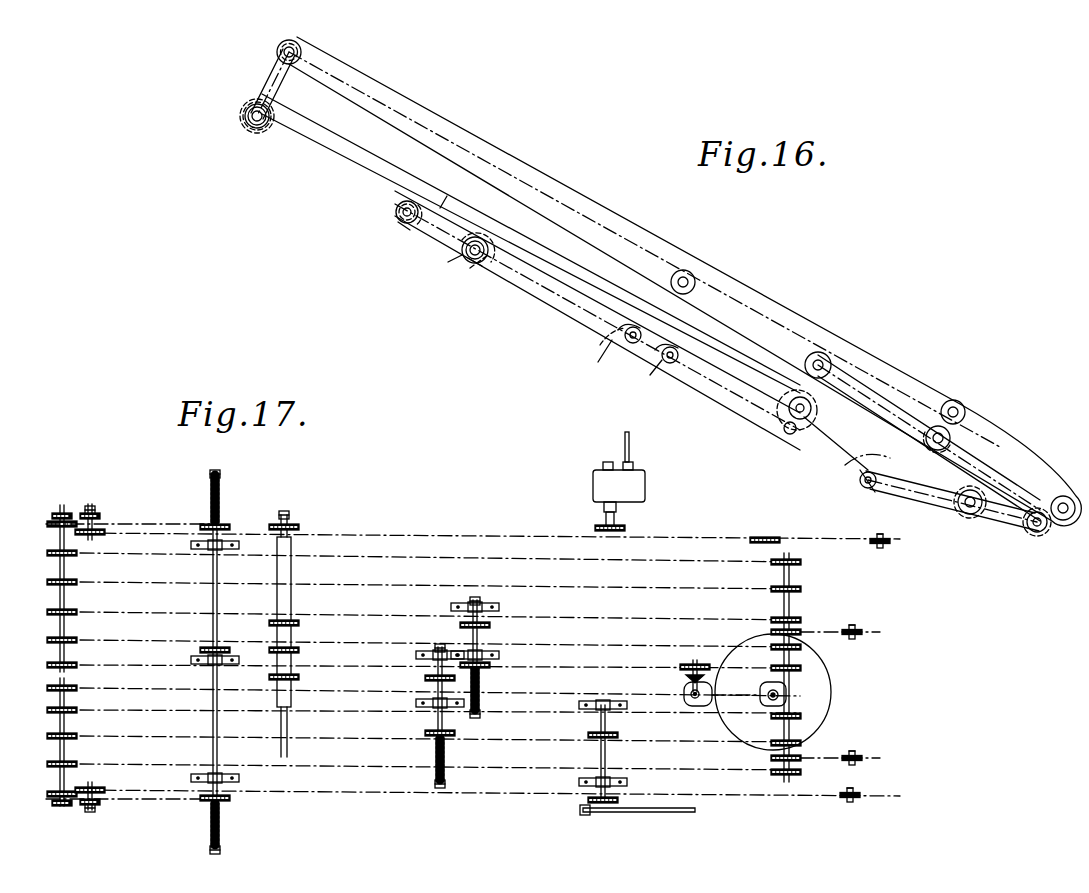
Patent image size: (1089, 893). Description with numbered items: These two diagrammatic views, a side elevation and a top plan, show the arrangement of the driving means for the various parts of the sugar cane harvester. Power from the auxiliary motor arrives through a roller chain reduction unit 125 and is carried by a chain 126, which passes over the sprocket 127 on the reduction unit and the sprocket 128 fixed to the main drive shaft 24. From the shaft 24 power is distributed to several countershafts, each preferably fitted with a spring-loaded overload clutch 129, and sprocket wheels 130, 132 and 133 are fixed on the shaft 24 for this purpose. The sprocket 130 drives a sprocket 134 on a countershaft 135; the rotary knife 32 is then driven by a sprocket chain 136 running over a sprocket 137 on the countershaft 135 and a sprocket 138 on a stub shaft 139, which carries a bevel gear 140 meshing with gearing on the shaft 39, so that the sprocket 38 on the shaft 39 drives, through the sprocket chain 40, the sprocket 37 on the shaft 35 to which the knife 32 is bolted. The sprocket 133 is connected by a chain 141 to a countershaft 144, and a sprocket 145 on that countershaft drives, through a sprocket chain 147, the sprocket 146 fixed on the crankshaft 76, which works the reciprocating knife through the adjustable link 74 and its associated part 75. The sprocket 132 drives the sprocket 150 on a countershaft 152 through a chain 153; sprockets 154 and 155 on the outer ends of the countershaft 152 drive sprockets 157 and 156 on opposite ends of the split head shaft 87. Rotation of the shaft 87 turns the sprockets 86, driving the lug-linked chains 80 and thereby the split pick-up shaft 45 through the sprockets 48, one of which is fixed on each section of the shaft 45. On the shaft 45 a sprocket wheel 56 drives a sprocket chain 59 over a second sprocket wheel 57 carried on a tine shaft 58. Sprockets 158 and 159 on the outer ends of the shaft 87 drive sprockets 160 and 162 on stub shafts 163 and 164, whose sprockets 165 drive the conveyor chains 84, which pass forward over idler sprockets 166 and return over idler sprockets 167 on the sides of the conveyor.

In FIG. 16, the shaft 24 is at (466, 262).
In FIG. 17, the shaft 24 is at (292, 567).
In FIG. 17, the knife 32 is at (832, 685).
In FIG. 17, the shaft 35 is at (780, 697).
In FIG. 17, the sprocket 37 is at (784, 687).
In FIG. 17, the sprocket 38 is at (705, 687).
In FIG. 17, the shaft 39 is at (690, 695).
In FIG. 17, the sprocket chain 40 is at (710, 705).
In FIG. 16, the split shaft 45 is at (968, 514).
In FIG. 17, the split shaft 45 is at (791, 600).
In FIG. 16, the sprocket wheels 48 is at (960, 507).
In FIG. 17, the sprocket wheels 48 is at (798, 588).
In FIG. 17, the sprocket wheel 56 is at (770, 631).
In FIG. 16, the sprocket wheel 57 is at (1043, 530).
In FIG. 17, the sprocket wheel 57 is at (864, 631).
In FIG. 16, the tine shaft 58 is at (1033, 535).
In FIG. 17, the tine shaft 58 is at (856, 625).
In FIG. 16, the sprocket chain 59 is at (1010, 519).
In FIG. 17, the sprocket chain 59 is at (814, 630).
In FIG. 17, the adjustable link 74 is at (672, 813).
In FIG. 17, the bracket 75 is at (584, 815).
In FIG. 16, the crankshaft 76 is at (786, 434).
In FIG. 17, the crankshaft 76 is at (608, 756).
In FIG. 16, the lug linked chains 80 is at (455, 220).
In FIG. 17, the lug linked chains 80 is at (142, 567).
In FIG. 16, the lug-linked conveyor chains 84 is at (528, 150).
In FIG. 17, the lug-linked conveyor chains 84 is at (176, 531).
In FIG. 16, the sprockets 86 is at (245, 118).
In FIG. 17, the sprockets 86 is at (46, 582).
In FIG. 16, the split shaft 87 is at (248, 109).
In FIG. 17, the split shaft 87 is at (58, 597).
In FIG. 16, the roller chain reduction unit 125 is at (832, 372).
In FIG. 17, the roller chain reduction unit 125 is at (592, 482).
In FIG. 16, the chain 126 is at (505, 298).
In FIG. 17, the chain 126 is at (442, 531).
In FIG. 16, the sprocket 127 is at (812, 403).
In FIG. 17, the sprocket 127 is at (626, 527).
In FIG. 16, the sprocket 128 is at (480, 268).
In FIG. 17, the sprocket 128 is at (292, 519).
In FIG. 17, the spring-loaded overload clutch 129 is at (222, 487).
In FIG. 17, the sprocket wheel 130 is at (294, 619).
In FIG. 16, the sprocket wheel 132 is at (488, 237).
In FIG. 17, the sprocket wheel 132 is at (300, 649).
In FIG. 16, the sprocket wheel 133 is at (460, 256).
In FIG. 17, the sprocket wheel 133 is at (294, 679).
In FIG. 17, the sprocket 134 is at (492, 624).
In FIG. 16, the countershaft 135 is at (650, 375).
In FIG. 17, the countershaft 135 is at (460, 632).
In FIG. 16, the sprocket chain 136 is at (881, 466).
In FIG. 17, the sprocket chain 136 is at (564, 661).
In FIG. 16, the sprocket 137 is at (668, 365).
In FIG. 16, the sprocket 138 is at (858, 486).
In FIG. 17, the sprocket 138 is at (692, 663).
In FIG. 16, the stub shaft 139 is at (866, 490).
In FIG. 17, the bevel gear 140 is at (712, 681).
In FIG. 17, the chain 141 is at (364, 677).
In FIG. 16, the countershaft 144 is at (628, 345).
In FIG. 17, the countershaft 144 is at (436, 721).
In FIG. 16, the sprocket 145 is at (589, 348).
In FIG. 17, the sprocket 145 is at (428, 736).
In FIG. 17, the sprocket 146 is at (612, 733).
In FIG. 17, the sprocket chain 147 is at (510, 735).
In FIG. 16, the sprocket 150 is at (405, 236).
In FIG. 17, the sprocket 150 is at (200, 649).
In FIG. 16, the countershaft 152 is at (398, 220).
In FIG. 17, the countershaft 152 is at (210, 675).
In FIG. 16, the chain 153 is at (445, 196).
In FIG. 17, the sprocket 154 is at (226, 523).
In FIG. 16, the sprocket 155 is at (392, 214).
In FIG. 17, the sprocket 155 is at (246, 635).
In FIG. 17, the sprocket 156 is at (50, 792).
In FIG. 17, the sprocket 157 is at (46, 525).
In FIG. 16, the sprocket 158 is at (249, 128).
In FIG. 17, the sprocket 158 is at (56, 804).
In FIG. 17, the sprocket 159 is at (52, 515).
In FIG. 16, the sprocket 160 is at (300, 58).
In FIG. 17, the sprocket 160 is at (96, 805).
In FIG. 17, the sprocket 162 is at (94, 513).
In FIG. 16, the stub shaft 163 is at (277, 52).
In FIG. 17, the stub shaft 163 is at (88, 811).
In FIG. 17, the stub shaft 164 is at (90, 509).
In FIG. 17, the sprockets 165 is at (104, 529).
In FIG. 16, the idler sprockets 166 is at (1048, 495).
In FIG. 17, the idler sprockets 166 is at (888, 543).
In FIG. 16, the idler sprockets 167 is at (698, 280).